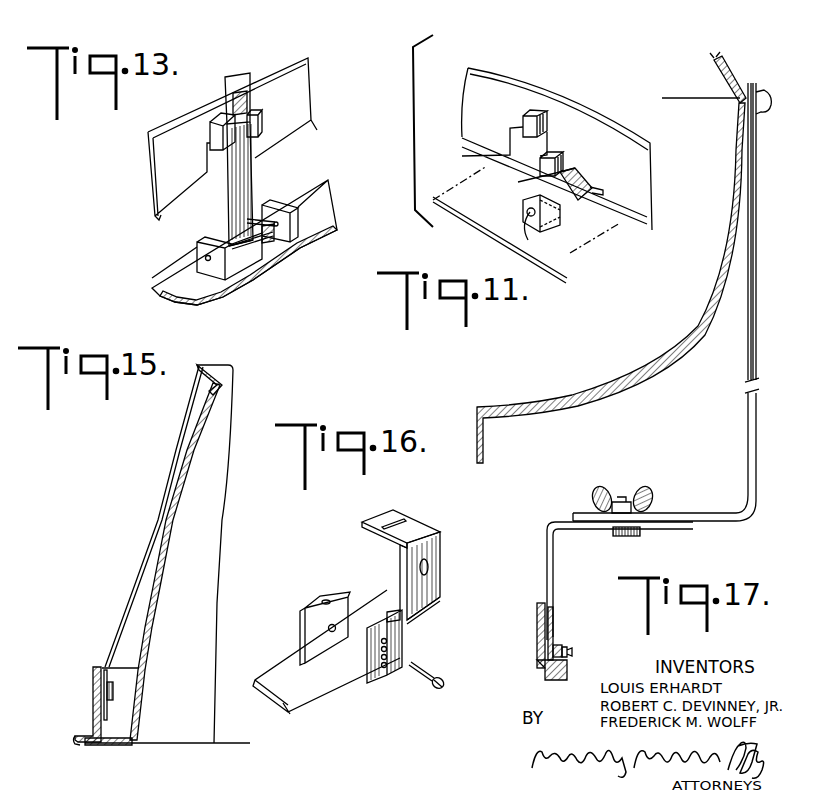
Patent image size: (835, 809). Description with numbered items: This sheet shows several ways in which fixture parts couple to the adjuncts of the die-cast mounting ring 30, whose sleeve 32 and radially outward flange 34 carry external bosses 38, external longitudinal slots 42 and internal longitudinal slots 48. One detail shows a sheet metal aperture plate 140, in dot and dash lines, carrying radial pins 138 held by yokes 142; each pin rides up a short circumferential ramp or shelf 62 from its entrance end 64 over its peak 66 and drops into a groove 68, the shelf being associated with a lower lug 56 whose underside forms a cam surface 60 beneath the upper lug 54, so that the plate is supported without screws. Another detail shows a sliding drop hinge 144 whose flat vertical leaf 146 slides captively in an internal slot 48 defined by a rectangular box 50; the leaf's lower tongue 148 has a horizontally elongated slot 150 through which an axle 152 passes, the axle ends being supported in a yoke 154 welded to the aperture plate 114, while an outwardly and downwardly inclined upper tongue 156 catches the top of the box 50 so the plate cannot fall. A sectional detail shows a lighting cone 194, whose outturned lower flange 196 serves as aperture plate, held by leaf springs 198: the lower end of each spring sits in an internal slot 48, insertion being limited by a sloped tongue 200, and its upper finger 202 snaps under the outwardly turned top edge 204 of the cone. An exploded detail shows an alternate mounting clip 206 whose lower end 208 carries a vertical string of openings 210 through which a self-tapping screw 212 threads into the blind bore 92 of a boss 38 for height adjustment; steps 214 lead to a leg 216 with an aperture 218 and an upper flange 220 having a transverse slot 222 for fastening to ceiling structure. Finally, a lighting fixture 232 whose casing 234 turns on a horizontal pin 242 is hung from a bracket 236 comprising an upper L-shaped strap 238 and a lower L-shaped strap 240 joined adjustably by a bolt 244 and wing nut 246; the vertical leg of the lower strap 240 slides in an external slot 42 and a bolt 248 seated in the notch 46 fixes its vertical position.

In FIG. 11, the mounting ring 30 is at (582, 100).
In FIG. 17, the mounting ring 30 is at (532, 637).
In FIG. 15, the mounting ring 30 is at (78, 697).
In FIG. 16, the mounting ring 30 is at (242, 672).
In FIG. 15, the sleeve 32 is at (215, 554).
In FIG. 16, the sleeve 32 is at (262, 618).
In FIG. 16, the flange 34 is at (300, 713).
In FIG. 16, the external boss 38 is at (303, 602).
In FIG. 17, the external longitudinal slot 42 is at (557, 633).
In FIG. 17, the notch 46 is at (560, 645).
In FIG. 13, the internal longitudinal slot 48 is at (250, 105).
In FIG. 15, the internal longitudinal slot 48 is at (108, 682).
In FIG. 13, the rectangular box 50 is at (258, 125).
In FIG. 11, the upper lug 54 is at (536, 111).
In FIG. 11, the lower lug 56 is at (553, 153).
In FIG. 11, the cam surface 60 is at (533, 197).
In FIG. 11, the internal circumferential shelf 62 is at (583, 178).
In FIG. 11, the entrance end 64 is at (603, 192).
In FIG. 11, the peak 66 is at (568, 172).
In FIG. 11, the groove 68 is at (537, 180).
In FIG. 16, the blind bore 92 is at (332, 632).
In FIG. 13, the aperture plate 114 is at (183, 288).
In FIG. 11, the radial pin 138 is at (533, 212).
In FIG. 11, the sheet metal aperture plate 140 is at (552, 277).
In FIG. 11, the yoke 142 is at (527, 218).
In FIG. 13, the sliding drop hinge 144 is at (221, 212).
In FIG. 13, the leaf 146 is at (254, 175).
In FIG. 13, the tongue 148 is at (278, 250).
In FIG. 13, the slot 150 is at (265, 247).
In FIG. 13, the axle 152 is at (240, 250).
In FIG. 13, the yoke 154 is at (293, 248).
In FIG. 13, the tongue 156 is at (233, 110).
In FIG. 15, the lighting cone 194 is at (153, 627).
In FIG. 15, the outturned lower flange 196 is at (118, 745).
In FIG. 15, the leaf spring 198 is at (160, 515).
In FIG. 15, the tongue 200 is at (97, 668).
In FIG. 15, the finger 202 is at (200, 381).
In FIG. 15, the outwardly turned top edge 204 is at (201, 362).
In FIG. 16, the mounting clip 206 is at (419, 598).
In FIG. 16, the lower end 208 is at (377, 677).
In FIG. 16, the openings 210 is at (387, 667).
In FIG. 16, the self-tapping screw 212 is at (432, 687).
In FIG. 16, the steps 214 is at (403, 630).
In FIG. 16, the leg 216 is at (437, 592).
In FIG. 16, the aperture 218 is at (430, 563).
In FIG. 16, the flange 220 is at (418, 525).
In FIG. 16, the transverse slot 222 is at (383, 520).
In FIG. 17, the lighting fixture 232 is at (587, 380).
In FIG. 17, the casing 234 is at (657, 356).
In FIG. 17, the bracket 236 is at (742, 468).
In FIG. 17, the upper L-shaped strap 238 is at (748, 359).
In FIG. 17, the lower L-shaped strap 240 is at (658, 527).
In FIG. 17, the horizontal pin 242 is at (766, 103).
In FIG. 17, the bolt 244 is at (620, 534).
In FIG. 17, the wing nut 246 is at (655, 494).
In FIG. 17, the bolt 248 is at (570, 656).